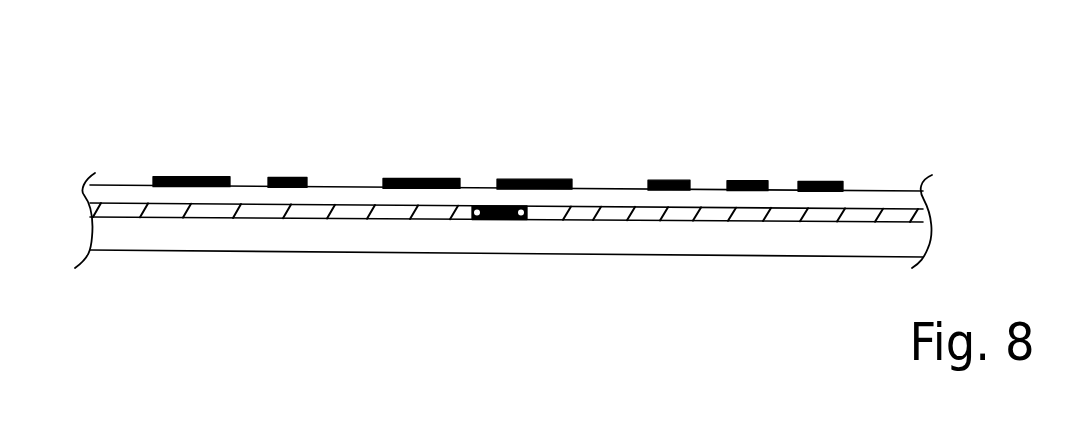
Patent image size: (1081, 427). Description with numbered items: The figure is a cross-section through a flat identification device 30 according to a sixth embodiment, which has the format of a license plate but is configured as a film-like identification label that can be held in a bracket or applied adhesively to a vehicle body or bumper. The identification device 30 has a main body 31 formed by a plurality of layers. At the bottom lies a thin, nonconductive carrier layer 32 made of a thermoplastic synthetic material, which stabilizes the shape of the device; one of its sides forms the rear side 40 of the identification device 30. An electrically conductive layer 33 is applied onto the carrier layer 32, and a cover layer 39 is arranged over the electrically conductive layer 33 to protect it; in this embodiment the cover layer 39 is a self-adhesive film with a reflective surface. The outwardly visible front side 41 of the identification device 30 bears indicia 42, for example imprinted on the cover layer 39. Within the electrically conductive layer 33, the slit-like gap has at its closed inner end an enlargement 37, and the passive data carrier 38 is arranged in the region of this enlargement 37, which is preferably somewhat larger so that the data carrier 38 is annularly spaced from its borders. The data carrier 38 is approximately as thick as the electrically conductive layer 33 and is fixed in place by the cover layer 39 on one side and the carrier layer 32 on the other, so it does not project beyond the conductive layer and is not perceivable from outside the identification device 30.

The identification device 30 is at (826, 94).
The main body 31 is at (122, 291).
The carrier layer 32 is at (908, 243).
The electrically conductive layer 33 is at (918, 216).
The enlargement 37 is at (517, 217).
The data carrier 38 is at (493, 205).
The cover layer 39 is at (912, 200).
The rear side 40 is at (456, 279).
The front side 41 is at (606, 151).
The indicia 42 is at (673, 180).